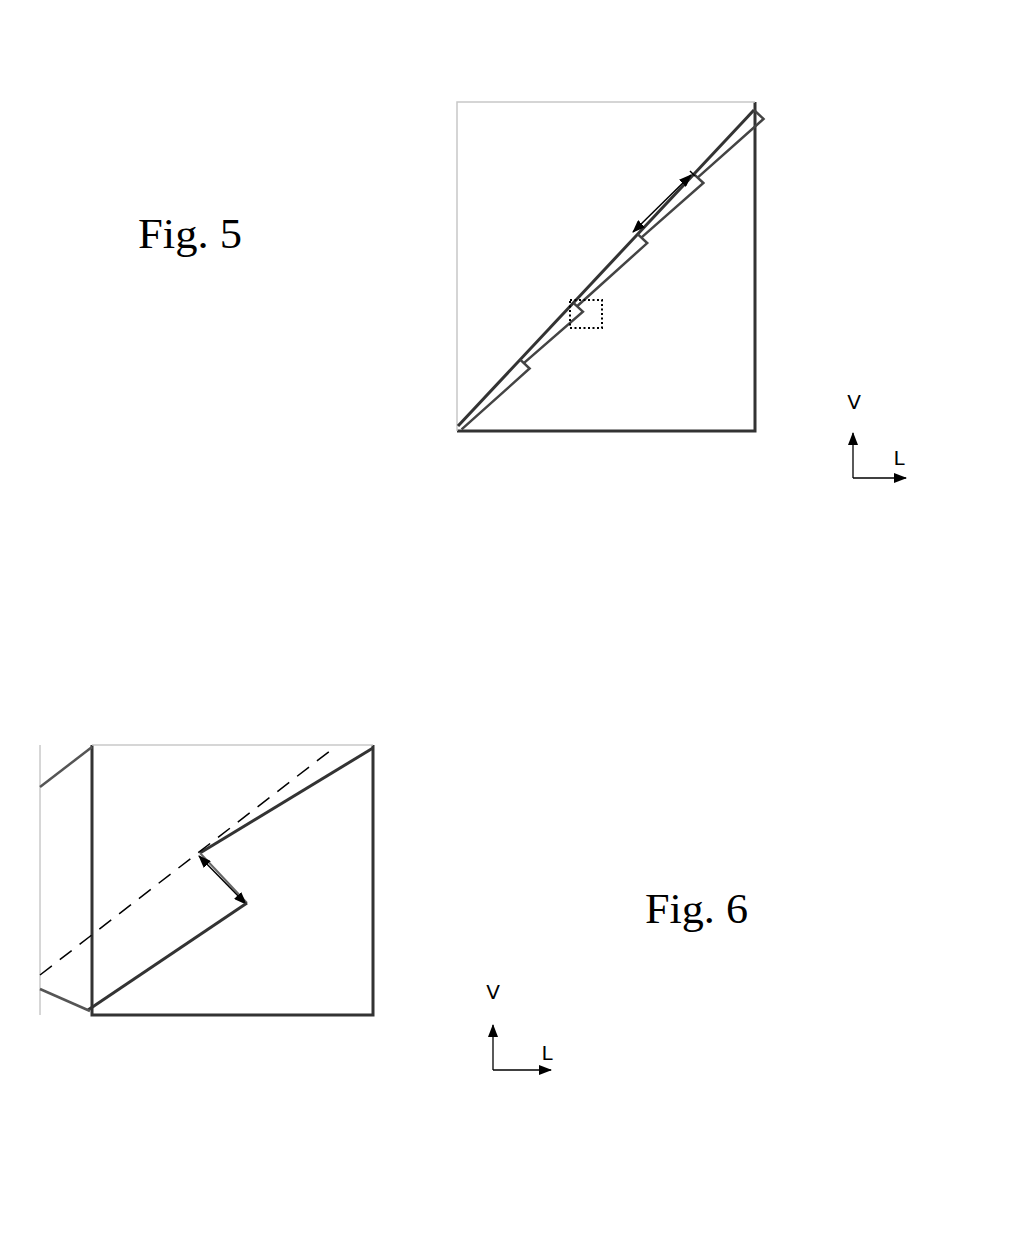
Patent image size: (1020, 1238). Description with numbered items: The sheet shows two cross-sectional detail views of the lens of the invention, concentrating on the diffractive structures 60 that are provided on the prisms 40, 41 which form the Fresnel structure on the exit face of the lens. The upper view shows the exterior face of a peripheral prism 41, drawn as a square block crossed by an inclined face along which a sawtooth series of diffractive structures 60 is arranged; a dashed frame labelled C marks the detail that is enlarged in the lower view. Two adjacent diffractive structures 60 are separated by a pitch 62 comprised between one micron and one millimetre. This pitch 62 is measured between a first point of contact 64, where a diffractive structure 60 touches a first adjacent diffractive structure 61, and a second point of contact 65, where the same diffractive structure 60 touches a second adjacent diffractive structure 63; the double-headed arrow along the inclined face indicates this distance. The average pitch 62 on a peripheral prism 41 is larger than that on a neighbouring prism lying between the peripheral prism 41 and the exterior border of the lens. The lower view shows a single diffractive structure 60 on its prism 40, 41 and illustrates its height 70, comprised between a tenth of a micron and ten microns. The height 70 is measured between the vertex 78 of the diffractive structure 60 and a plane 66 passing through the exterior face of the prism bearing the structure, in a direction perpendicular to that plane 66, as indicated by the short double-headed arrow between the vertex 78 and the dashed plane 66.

In FIG. 5, the prism 40 is at (555, 190).
In FIG. 6, the peripheral prism 41 is at (112, 803).
In FIG. 5, the diffractive structure 60 is at (682, 195).
In FIG. 6, the diffractive structure 60 is at (107, 968).
In FIG. 5, the first adjacent diffractive structure 61 is at (740, 130).
In FIG. 5, the pitch 62 is at (662, 207).
In FIG. 5, the second adjacent diffractive structure 63 is at (622, 262).
In FIG. 5, the first point of contact 64 is at (690, 172).
In FIG. 5, the second point of contact 65 is at (633, 230).
In FIG. 6, the plane 66 is at (163, 880).
In FIG. 6, the height 70 is at (242, 887).
In FIG. 6, the vertex 78 is at (250, 905).
In FIG. 5, the detail reference C is at (570, 313).